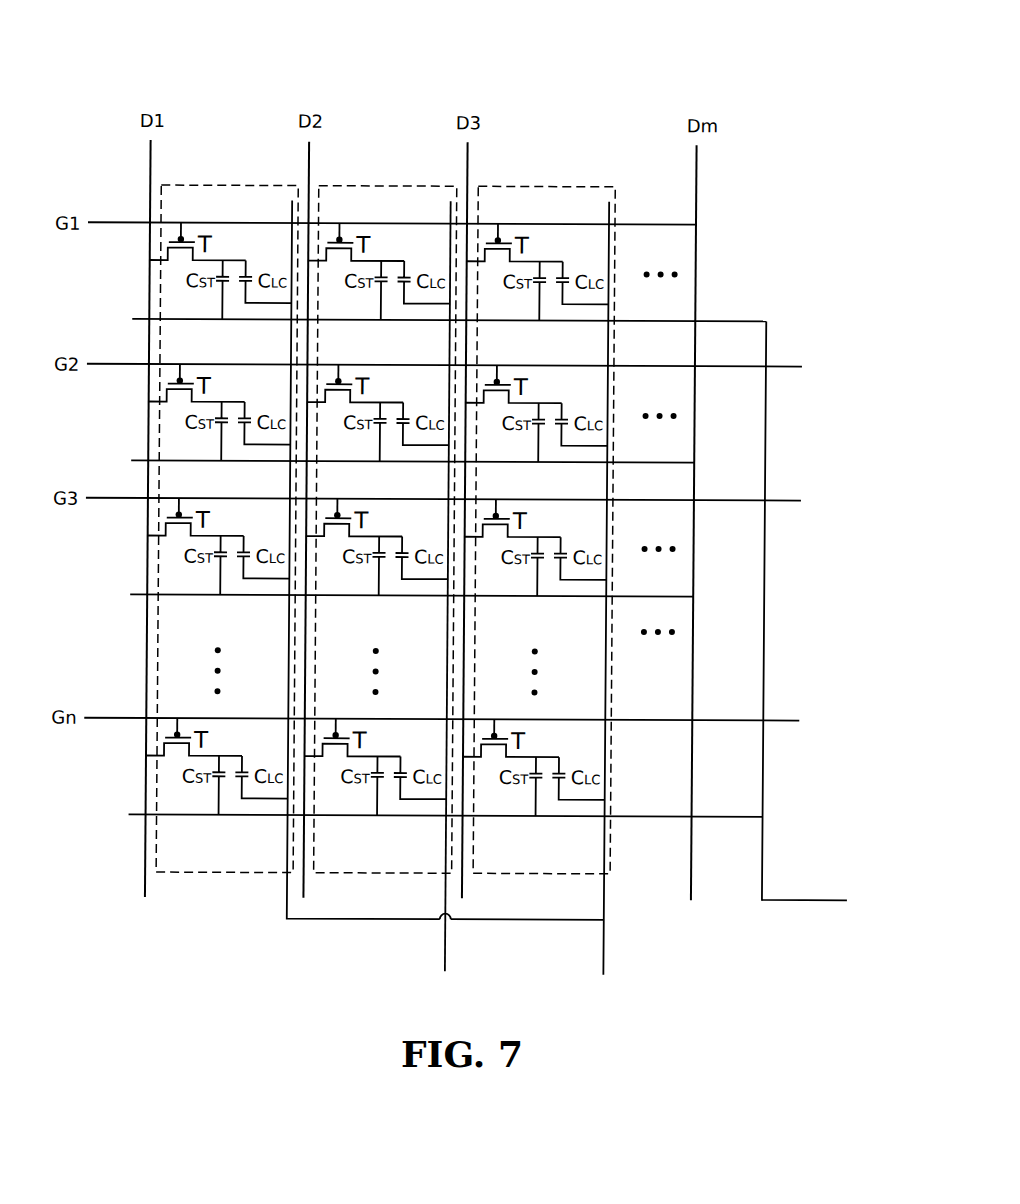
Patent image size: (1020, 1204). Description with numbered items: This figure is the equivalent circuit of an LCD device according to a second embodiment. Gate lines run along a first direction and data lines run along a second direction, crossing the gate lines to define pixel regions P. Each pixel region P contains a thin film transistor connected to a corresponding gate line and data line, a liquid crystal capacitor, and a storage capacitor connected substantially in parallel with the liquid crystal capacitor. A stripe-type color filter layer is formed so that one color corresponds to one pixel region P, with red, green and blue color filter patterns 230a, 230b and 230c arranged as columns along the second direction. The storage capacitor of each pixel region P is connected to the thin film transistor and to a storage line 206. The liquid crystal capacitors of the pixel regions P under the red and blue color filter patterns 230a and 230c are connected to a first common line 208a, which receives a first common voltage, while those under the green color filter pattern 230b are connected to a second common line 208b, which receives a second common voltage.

The red color filter pattern 230a is at (174, 451).
The green color filter pattern 230b is at (395, 186).
The blue color filter pattern 230c is at (568, 186).
The first common line 208a is at (450, 601).
The second common line 208b is at (461, 601).
The storage line 206 is at (852, 898).
The pixel region P is at (156, 292).